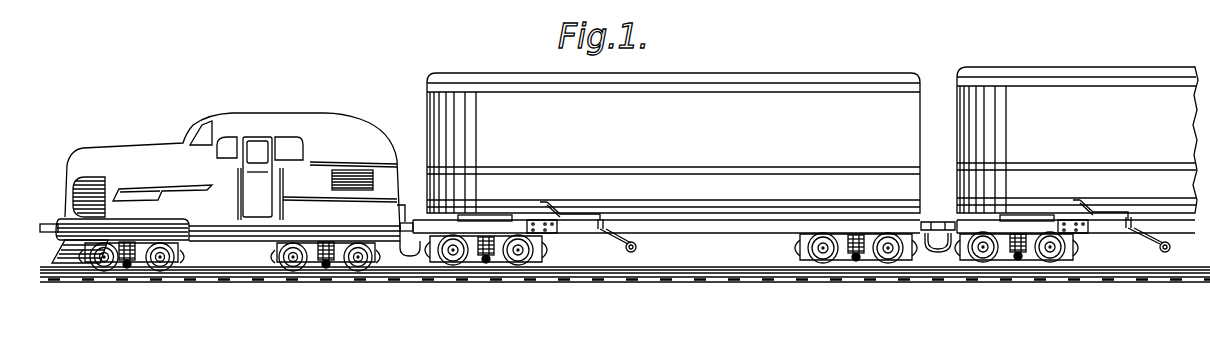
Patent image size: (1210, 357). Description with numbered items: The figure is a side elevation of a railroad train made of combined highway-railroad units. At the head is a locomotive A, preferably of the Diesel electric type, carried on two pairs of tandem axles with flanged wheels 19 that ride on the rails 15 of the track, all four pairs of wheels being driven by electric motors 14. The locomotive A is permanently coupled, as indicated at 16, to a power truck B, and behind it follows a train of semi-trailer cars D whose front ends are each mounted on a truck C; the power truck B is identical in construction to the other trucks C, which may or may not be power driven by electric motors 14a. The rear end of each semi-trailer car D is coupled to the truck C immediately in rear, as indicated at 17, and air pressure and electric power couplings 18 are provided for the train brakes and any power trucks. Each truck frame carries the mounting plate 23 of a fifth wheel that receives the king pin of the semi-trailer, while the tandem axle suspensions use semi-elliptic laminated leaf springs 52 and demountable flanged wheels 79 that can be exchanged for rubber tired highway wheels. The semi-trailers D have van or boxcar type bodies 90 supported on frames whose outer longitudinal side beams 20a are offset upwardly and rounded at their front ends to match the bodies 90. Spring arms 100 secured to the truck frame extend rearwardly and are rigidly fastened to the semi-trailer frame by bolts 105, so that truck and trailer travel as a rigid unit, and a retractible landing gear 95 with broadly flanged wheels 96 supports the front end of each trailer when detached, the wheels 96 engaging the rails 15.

The locomotive A is at (262, 122).
The power truck B is at (409, 222).
The truck C is at (1098, 248).
The semi-trailer car D is at (812, 124).
The electric motor 14 is at (268, 262).
The electric motor 14a is at (432, 266).
The rails 15 is at (698, 277).
The coupling 16 is at (405, 214).
The coupling 17 is at (938, 220).
The air pressure and electric power couplings 18 is at (398, 257).
The flanged wheels 19 is at (130, 262).
The outer longitudinal side beams 20a is at (710, 226).
The mounting plate 23 is at (512, 196).
The semi-elliptic laminated leaf spring 52 is at (857, 232).
The demountable flanged wheels 79 is at (482, 266).
The body 90 is at (811, 146).
The retractible landing gear 95 is at (614, 249).
The broadly flanged wheels 96 is at (638, 250).
The spring arms 100 is at (570, 218).
The bolts 105 is at (604, 226).